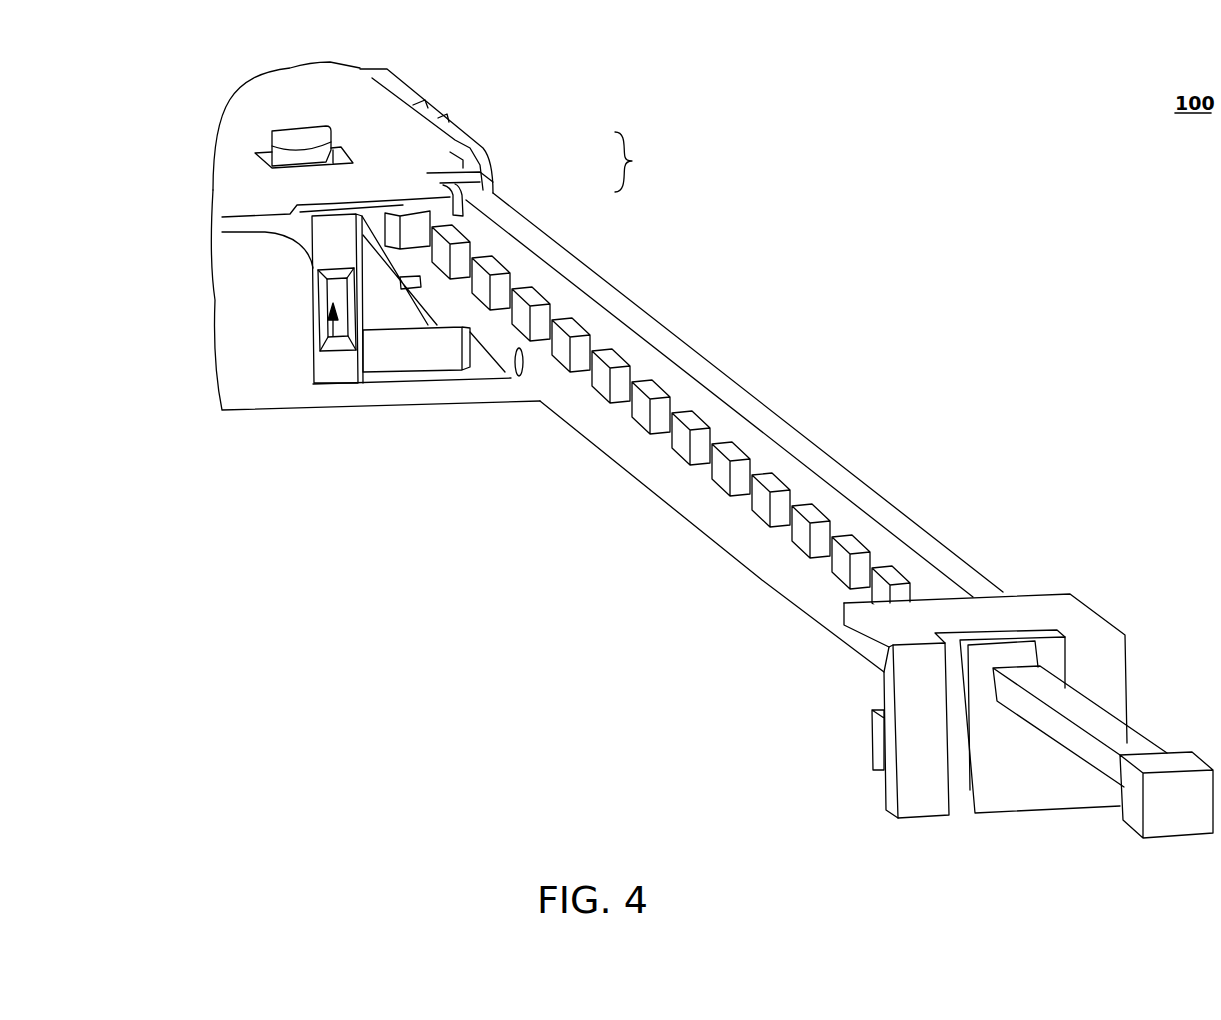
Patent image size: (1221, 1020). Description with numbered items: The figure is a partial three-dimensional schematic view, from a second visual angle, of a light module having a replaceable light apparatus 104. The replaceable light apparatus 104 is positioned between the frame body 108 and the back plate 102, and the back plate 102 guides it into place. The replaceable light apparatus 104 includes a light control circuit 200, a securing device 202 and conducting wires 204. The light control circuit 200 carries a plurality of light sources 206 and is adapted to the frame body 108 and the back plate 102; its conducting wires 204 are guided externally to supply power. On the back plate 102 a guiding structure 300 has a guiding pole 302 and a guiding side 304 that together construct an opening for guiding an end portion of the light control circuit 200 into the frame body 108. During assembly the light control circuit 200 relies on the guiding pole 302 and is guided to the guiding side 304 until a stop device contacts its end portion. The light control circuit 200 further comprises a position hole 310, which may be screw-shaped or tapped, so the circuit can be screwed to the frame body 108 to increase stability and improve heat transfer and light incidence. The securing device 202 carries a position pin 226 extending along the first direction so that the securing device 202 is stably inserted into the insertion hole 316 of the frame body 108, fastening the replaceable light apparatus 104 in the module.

The back plate 102 is at (381, 122).
The replaceable light apparatus 104 is at (989, 539).
The frame body 108 is at (268, 378).
The light control circuit 200 is at (750, 392).
The securing device 202 is at (1082, 600).
The conducting wires 204 is at (1102, 718).
The light sources 206 is at (641, 428).
The position pin 226 is at (879, 747).
The guiding structure 300 is at (644, 162).
The guiding pole 302 is at (497, 197).
The guiding side 304 is at (493, 180).
The position hole 310 is at (518, 370).
The insertion hole 316 is at (333, 336).